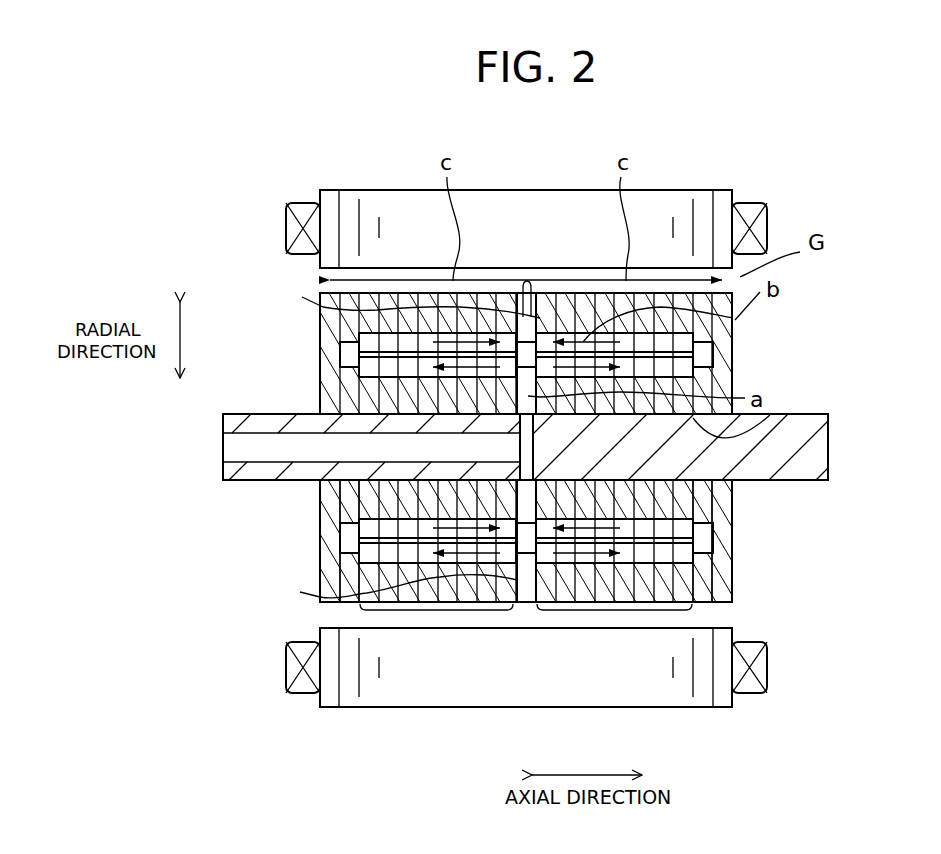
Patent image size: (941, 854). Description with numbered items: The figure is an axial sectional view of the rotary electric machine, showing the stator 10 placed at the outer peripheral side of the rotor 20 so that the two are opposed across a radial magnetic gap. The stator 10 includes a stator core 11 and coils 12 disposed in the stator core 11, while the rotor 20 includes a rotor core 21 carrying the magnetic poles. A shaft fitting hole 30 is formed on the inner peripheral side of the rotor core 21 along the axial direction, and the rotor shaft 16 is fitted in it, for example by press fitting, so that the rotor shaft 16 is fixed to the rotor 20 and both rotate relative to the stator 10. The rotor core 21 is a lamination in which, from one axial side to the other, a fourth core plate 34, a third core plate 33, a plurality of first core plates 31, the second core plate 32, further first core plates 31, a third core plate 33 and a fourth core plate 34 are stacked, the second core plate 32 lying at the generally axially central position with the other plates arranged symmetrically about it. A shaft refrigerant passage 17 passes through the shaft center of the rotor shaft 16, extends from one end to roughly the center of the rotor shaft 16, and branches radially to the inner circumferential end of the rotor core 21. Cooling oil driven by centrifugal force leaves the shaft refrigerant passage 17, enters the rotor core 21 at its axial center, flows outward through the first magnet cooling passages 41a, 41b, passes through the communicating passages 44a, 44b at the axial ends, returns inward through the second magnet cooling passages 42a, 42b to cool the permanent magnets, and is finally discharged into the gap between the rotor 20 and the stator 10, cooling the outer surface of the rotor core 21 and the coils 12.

The stator 10 is at (486, 712).
The stator core 11 is at (407, 213).
The coils 12 is at (285, 224).
The rotor shaft 16 is at (795, 445).
The shaft refrigerant passage 17 is at (243, 440).
The rotor 20 is at (538, 556).
The rotor core 21 is at (540, 347).
The shaft fitting hole 30 is at (770, 415).
The first core plates 31 is at (437, 615).
The second core plate 32 is at (526, 606).
The third core plate 33 is at (350, 606).
The fourth core plate 34 is at (329, 606).
The first magnet cooling passage 41a is at (427, 368).
The first magnet cooling passage 41b is at (428, 525).
The second magnet cooling passage 42a is at (410, 338).
The second magnet cooling passage 42b is at (407, 557).
The communicating passage 44a is at (347, 355).
The communicating passage 44b is at (347, 540).